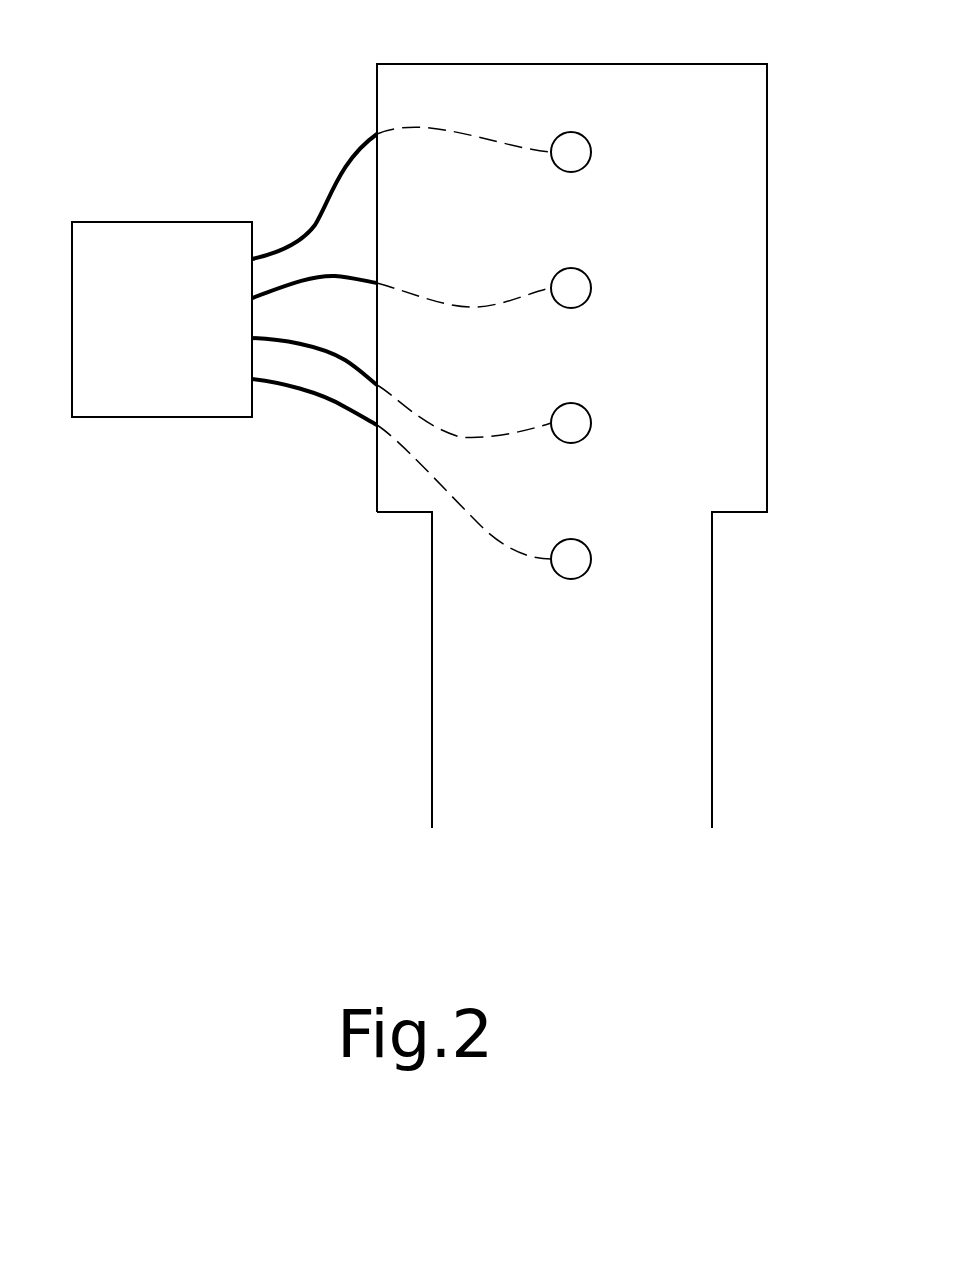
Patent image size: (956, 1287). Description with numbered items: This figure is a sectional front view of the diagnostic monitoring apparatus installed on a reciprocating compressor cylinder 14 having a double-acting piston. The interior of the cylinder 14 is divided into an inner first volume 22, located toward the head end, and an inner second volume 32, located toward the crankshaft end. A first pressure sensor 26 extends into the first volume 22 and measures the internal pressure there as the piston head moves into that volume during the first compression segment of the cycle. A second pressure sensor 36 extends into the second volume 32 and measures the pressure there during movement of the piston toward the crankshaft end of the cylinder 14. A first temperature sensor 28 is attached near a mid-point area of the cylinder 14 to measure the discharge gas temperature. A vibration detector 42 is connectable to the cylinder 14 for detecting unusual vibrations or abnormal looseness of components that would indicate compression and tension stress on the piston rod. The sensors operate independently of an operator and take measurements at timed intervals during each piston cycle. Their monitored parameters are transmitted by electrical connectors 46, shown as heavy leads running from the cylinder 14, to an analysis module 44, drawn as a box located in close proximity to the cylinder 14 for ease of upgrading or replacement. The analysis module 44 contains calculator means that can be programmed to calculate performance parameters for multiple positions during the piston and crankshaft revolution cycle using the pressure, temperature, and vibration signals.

The cylinder 14 is at (767, 222).
The first volume 22 is at (435, 88).
The first pressure sensor 26 is at (591, 152).
The first temperature sensor 28 is at (591, 288).
The second pressure sensor 36 is at (591, 423).
The vibration detector 42 is at (591, 559).
The second volume 32 is at (717, 445).
The analysis module 44 is at (148, 298).
The electrical connectors 46 is at (278, 342).